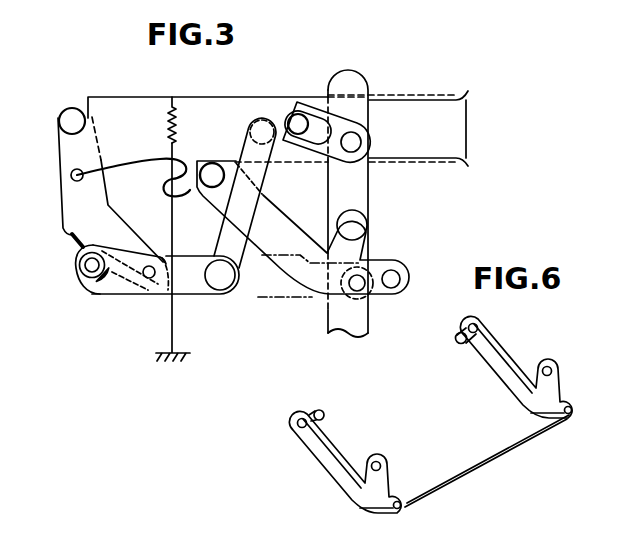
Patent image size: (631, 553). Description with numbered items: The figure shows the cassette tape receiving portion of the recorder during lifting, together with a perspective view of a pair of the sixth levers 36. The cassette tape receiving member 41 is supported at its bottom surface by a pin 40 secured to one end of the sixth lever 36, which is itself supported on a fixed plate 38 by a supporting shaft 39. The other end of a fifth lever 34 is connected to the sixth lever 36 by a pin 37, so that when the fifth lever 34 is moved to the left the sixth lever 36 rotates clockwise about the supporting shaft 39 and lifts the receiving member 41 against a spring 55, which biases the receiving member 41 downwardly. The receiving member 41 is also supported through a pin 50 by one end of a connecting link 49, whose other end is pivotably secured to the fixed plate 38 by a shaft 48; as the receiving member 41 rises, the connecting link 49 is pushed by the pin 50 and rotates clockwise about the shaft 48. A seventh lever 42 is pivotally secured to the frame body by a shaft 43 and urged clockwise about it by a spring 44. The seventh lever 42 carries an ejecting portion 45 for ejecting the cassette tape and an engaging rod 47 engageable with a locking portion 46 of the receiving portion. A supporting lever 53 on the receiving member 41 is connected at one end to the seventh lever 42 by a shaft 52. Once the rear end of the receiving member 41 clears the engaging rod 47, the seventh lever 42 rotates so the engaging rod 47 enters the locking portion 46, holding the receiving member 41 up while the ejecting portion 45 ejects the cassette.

In FIG. 3, the fifth lever 34 is at (287, 303).
In FIG. 3, the sixth lever 36 is at (286, 230).
In FIG. 6, the sixth lever 36 is at (328, 467).
In FIG. 3, the pin 37 is at (360, 291).
In FIG. 3, the fixed plate 38 is at (358, 78).
In FIG. 3, the supporting shaft 39 is at (357, 225).
In FIG. 6, the supporting shaft 39 is at (374, 456).
In FIG. 3, the pin 40 is at (214, 168).
In FIG. 6, the pin 40 is at (321, 411).
In FIG. 3, the cassette tape receiving member 41 is at (405, 97).
In FIG. 3, the seventh lever 42 is at (58, 150).
In FIG. 3, the shaft 43 is at (150, 279).
In FIG. 3, the spring 44 is at (72, 236).
In FIG. 3, the ejecting portion 45 is at (72, 116).
In FIG. 3, the locking portion 46 is at (157, 171).
In FIG. 3, the engaging rod 47 is at (71, 176).
In FIG. 3, the shaft 48 is at (357, 150).
In FIG. 3, the connecting link 49 is at (311, 112).
In FIG. 3, the pin 50 is at (296, 118).
In FIG. 3, the shaft 52 is at (83, 267).
In FIG. 3, the supporting lever 53 is at (262, 176).
In FIG. 3, the spring 55 is at (174, 328).